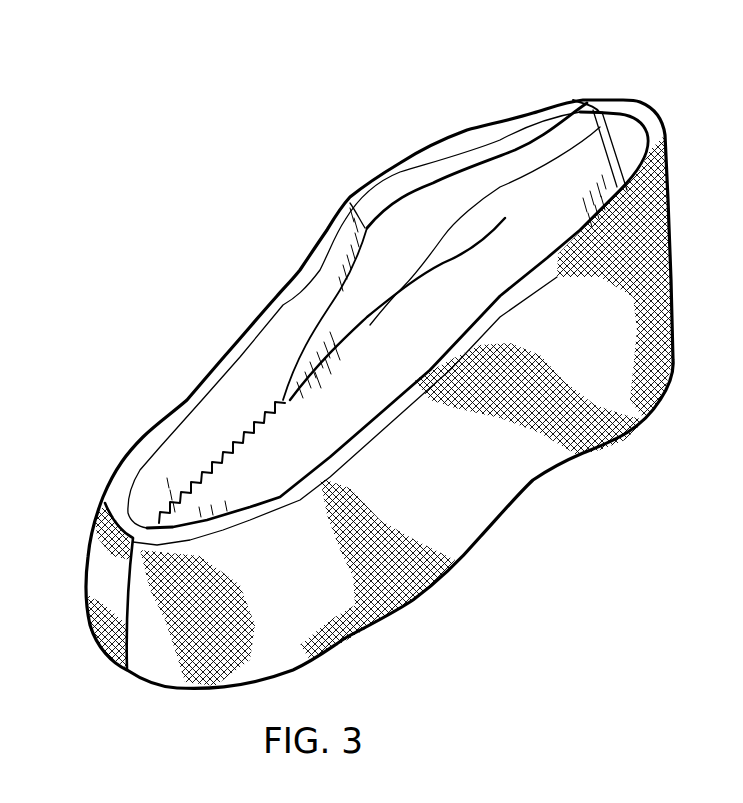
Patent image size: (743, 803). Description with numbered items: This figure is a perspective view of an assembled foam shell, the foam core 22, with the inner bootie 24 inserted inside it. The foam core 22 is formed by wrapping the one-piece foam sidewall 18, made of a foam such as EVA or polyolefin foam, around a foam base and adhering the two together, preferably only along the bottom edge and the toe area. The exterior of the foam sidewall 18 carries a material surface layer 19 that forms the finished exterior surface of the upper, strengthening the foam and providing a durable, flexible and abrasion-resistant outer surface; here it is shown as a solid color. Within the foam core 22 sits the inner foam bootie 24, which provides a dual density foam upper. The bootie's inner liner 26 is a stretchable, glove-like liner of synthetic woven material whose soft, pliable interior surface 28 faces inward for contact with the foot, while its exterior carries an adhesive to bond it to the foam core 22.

The foam sidewall 18 is at (191, 393).
The material surface layer 19 is at (653, 352).
The foam core 22 is at (687, 215).
The inner foam bootie 24 is at (590, 123).
The inner liner 26 is at (496, 243).
The interior surface 28 is at (430, 212).